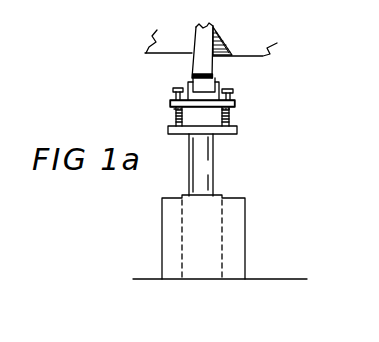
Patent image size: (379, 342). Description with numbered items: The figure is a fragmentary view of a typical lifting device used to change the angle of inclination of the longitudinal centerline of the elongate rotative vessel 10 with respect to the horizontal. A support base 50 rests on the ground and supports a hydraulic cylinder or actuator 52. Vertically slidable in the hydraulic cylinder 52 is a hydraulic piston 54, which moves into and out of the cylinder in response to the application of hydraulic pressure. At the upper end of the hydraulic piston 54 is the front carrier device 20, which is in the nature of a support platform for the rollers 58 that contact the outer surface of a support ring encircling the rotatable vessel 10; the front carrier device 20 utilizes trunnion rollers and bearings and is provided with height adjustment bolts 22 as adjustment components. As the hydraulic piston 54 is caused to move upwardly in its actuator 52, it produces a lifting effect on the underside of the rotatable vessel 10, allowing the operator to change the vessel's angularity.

The elongate rotative vessel 10 is at (177, 53).
The rollers 58 is at (214, 78).
The front carrier device 20 is at (170, 128).
The height adjustment bolts 22 is at (232, 115).
The hydraulic piston 54 is at (208, 158).
The hydraulic cylinder or actuator 52 is at (216, 212).
The support base 50 is at (167, 237).